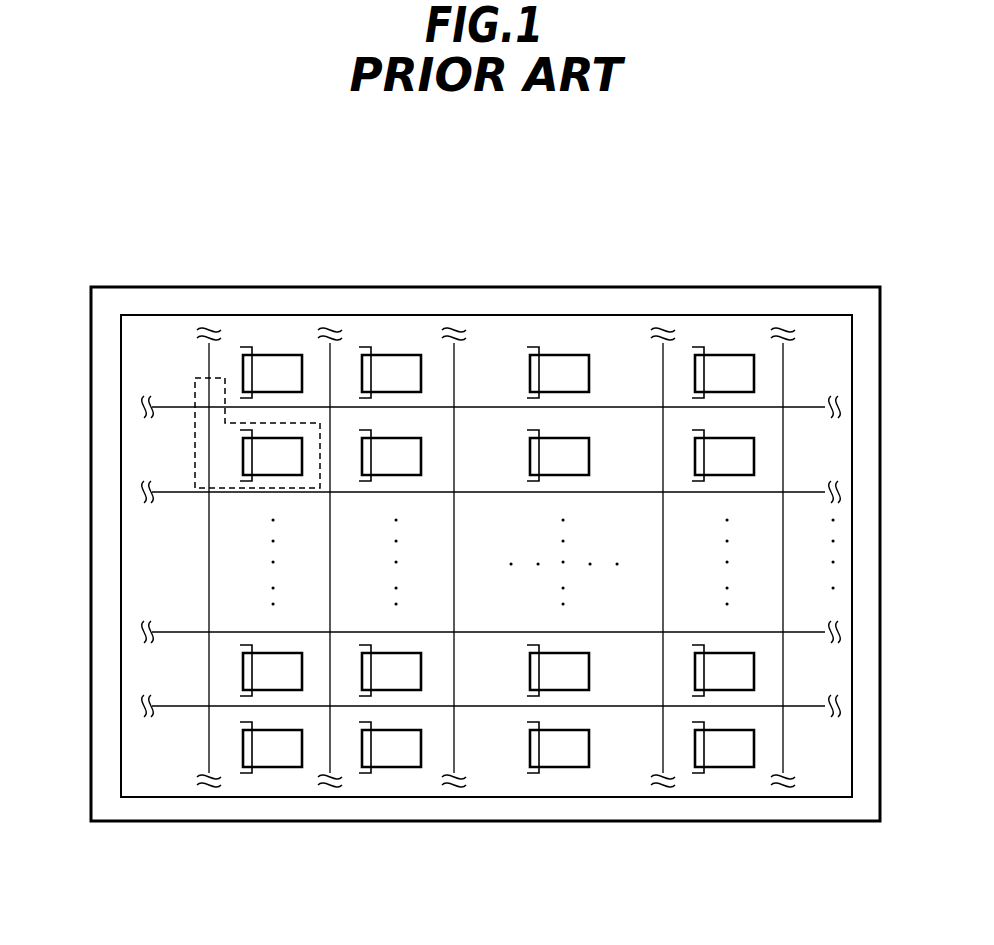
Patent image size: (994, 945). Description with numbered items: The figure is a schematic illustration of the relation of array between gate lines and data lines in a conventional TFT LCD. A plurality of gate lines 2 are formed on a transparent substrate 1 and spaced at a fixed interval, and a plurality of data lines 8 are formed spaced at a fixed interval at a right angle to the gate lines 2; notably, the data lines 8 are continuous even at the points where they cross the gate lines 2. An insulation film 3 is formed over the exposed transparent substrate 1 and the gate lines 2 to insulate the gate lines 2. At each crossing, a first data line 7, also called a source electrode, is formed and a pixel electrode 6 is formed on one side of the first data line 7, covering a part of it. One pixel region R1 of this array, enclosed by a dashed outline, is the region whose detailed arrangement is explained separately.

The transparent substrate 1 is at (848, 287).
The gate line 2 is at (510, 407).
The insulation film 3 is at (142, 315).
The pixel electrode 6 is at (730, 358).
The first data line 7 is at (275, 368).
The data line 8 is at (340, 364).
The pixel region R1 is at (200, 455).